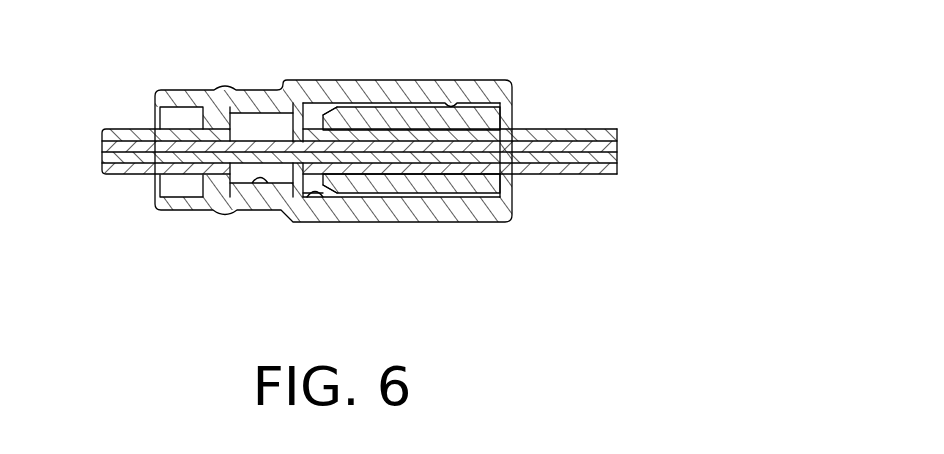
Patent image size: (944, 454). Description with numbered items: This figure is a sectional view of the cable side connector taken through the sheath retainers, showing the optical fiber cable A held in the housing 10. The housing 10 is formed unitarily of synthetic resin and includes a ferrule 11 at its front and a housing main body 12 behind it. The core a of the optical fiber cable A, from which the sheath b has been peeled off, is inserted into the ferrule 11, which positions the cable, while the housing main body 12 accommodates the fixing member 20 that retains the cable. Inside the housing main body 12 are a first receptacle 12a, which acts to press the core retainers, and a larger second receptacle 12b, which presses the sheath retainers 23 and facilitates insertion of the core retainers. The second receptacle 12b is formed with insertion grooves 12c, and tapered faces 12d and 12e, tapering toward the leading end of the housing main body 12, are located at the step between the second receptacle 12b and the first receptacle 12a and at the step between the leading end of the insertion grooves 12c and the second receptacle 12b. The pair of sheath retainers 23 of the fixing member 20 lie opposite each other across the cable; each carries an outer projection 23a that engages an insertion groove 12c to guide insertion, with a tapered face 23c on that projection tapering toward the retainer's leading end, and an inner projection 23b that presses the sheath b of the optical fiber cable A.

The housing 10 is at (159, 79).
The ferrule 11 is at (113, 127).
The housing main body 12 is at (247, 90).
The first receptacle 12a is at (263, 168).
The second receptacle 12b is at (317, 200).
The insertion groove 12c is at (455, 100).
The tapered face 12d is at (290, 80).
The tapered face 12e is at (418, 207).
The fixing member 20 is at (515, 112).
The sheath retainer 23 is at (492, 220).
The projection 23a is at (357, 198).
The projection 23b is at (350, 200).
The tapered face 23c is at (333, 106).
The optical fiber cable A is at (616, 131).
The core a is at (563, 157).
The sheath b is at (560, 131).